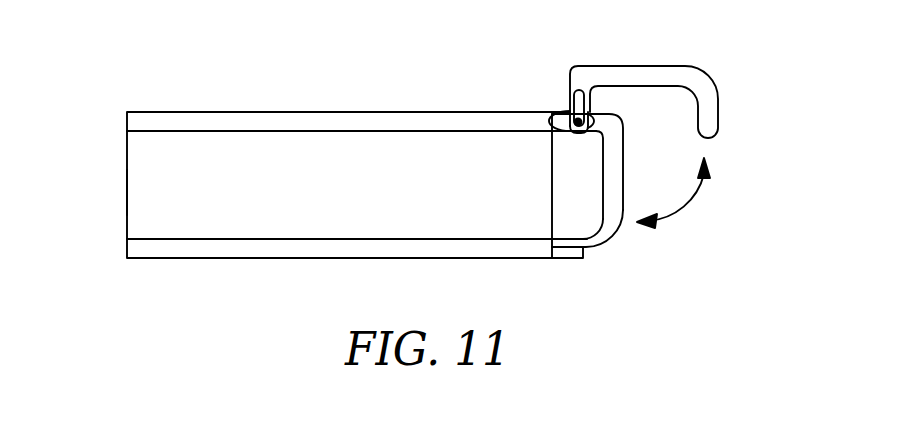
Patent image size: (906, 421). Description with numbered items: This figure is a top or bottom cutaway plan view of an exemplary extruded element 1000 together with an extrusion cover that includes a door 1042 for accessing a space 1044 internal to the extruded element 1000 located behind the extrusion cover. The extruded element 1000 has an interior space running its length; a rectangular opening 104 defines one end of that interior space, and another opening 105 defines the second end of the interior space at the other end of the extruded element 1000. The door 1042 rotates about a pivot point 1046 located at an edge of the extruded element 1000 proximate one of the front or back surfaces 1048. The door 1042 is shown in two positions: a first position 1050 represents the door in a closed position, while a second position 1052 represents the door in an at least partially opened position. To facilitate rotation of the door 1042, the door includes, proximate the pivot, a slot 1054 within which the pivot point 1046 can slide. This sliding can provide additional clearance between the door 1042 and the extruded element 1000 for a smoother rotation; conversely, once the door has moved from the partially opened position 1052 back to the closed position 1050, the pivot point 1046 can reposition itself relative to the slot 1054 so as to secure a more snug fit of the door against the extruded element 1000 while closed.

The extruded element 1000 is at (243, 248).
The front or back surface 1048 is at (317, 110).
The space 1044 is at (374, 231).
The opening 105 is at (133, 184).
The rectangular opening 104 is at (534, 232).
The first position 1050 is at (598, 243).
The second position 1052 is at (603, 64).
The door 1042 is at (678, 77).
The slot 1054 is at (577, 121).
The pivot point 1046 is at (593, 114).